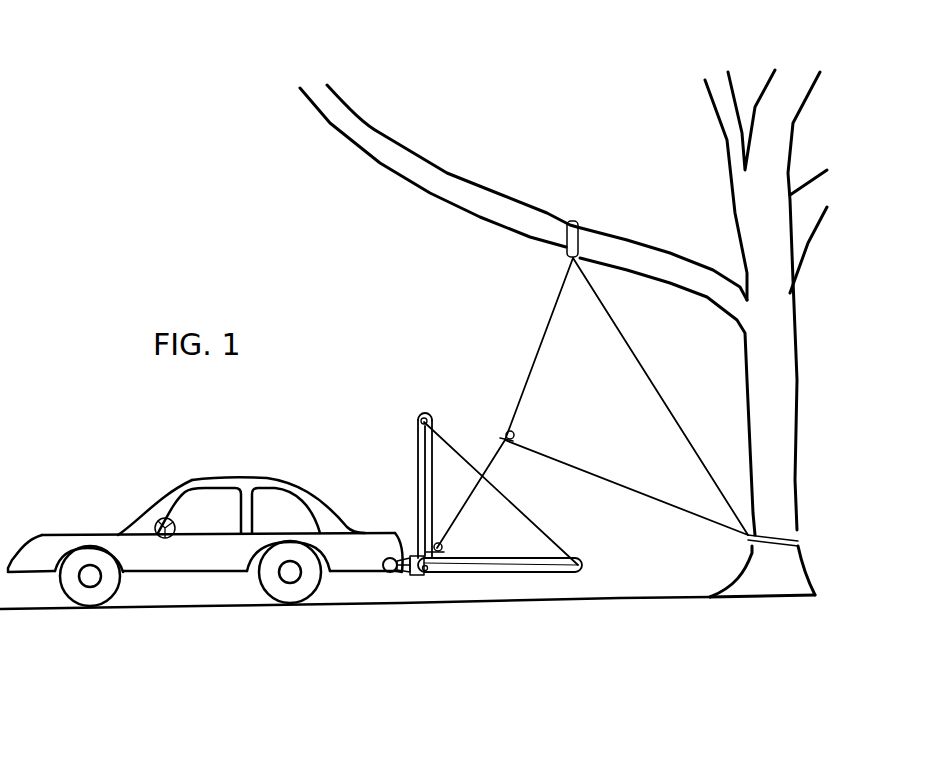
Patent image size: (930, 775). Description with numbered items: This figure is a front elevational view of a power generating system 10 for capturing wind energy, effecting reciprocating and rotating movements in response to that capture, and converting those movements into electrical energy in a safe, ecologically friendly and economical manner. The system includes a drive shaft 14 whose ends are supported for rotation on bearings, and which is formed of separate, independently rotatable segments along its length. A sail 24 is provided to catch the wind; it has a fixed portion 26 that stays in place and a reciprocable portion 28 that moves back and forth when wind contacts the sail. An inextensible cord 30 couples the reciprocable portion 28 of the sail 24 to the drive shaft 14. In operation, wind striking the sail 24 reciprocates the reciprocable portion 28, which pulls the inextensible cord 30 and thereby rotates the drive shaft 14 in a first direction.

The power generating system 10 is at (306, 343).
The drive shaft 14 is at (388, 575).
The sail 24 is at (589, 418).
The fixed portion 26 is at (442, 438).
The reciprocable portion 28 is at (512, 430).
The inextensible cord 30 is at (505, 443).